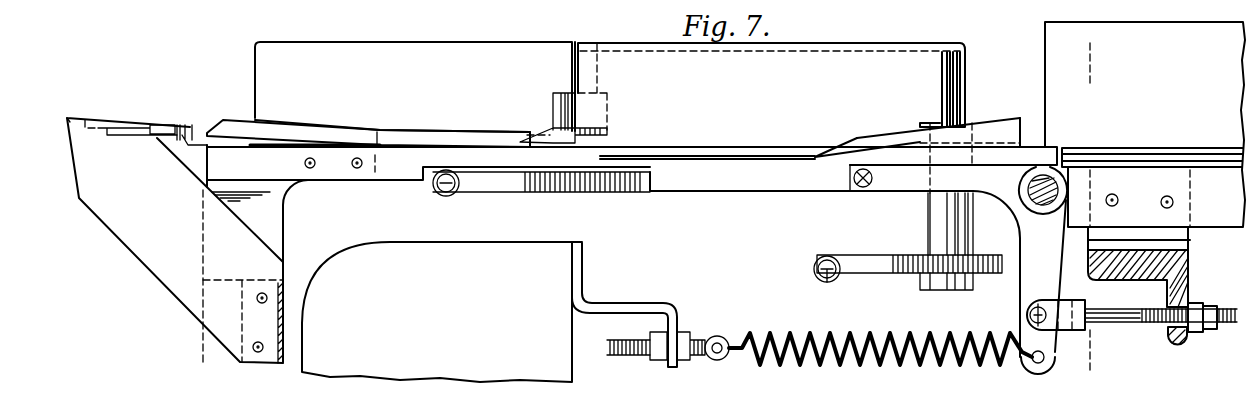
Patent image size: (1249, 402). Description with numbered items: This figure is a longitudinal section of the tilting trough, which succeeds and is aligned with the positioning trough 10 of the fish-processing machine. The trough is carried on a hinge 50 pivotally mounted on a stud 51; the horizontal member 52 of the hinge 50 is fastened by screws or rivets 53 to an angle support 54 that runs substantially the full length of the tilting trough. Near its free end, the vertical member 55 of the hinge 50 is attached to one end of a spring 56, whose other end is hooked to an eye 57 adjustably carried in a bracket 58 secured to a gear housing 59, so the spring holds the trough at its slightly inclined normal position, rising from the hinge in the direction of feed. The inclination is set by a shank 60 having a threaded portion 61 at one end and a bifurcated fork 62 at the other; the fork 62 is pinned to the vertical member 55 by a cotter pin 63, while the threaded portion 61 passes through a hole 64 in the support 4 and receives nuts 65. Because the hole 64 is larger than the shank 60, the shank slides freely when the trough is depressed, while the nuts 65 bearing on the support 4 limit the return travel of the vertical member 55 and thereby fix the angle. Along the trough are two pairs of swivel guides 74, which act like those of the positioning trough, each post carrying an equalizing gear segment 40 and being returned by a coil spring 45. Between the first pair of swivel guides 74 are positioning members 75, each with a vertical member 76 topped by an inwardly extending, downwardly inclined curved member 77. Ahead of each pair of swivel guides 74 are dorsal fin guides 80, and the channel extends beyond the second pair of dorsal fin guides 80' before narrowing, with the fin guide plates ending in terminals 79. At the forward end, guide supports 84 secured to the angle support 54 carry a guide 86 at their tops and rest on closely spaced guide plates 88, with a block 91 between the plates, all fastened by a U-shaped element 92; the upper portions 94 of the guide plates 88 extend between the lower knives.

The support 4 is at (1186, 273).
The positioning trough 10 is at (1083, 43).
The equalizing gear segment 40 is at (625, 197).
The coil spring 45 is at (452, 196).
The hinge 50 is at (1026, 280).
The stud 51 is at (1043, 205).
The horizontal member 52 is at (903, 190).
The screws or rivets 53 is at (865, 188).
The angle support 54 is at (797, 183).
The vertical member 55 is at (1050, 362).
The spring 56 is at (905, 336).
The eye 57 is at (712, 361).
The bracket 58 is at (658, 306).
The gear housing 59 is at (515, 248).
The shank 60 is at (1123, 324).
The threaded portion 61 is at (1163, 323).
The bifurcated fork 62 is at (1067, 303).
The cotter pin 63 is at (1030, 315).
The hole 64 is at (1180, 344).
The nuts 65 is at (1207, 305).
The swivel guides 74 is at (843, 52).
The positioning members 75 is at (978, 122).
The vertical member 76 is at (1005, 122).
The curved member 77 is at (822, 148).
The terminals 79 is at (98, 123).
The dorsal fin guides 80 is at (563, 118).
The second pair of dorsal fin guides 80' is at (368, 120).
The guide support 84 is at (278, 230).
The guide 86 is at (192, 126).
The guide plates 88 is at (148, 258).
The block 91 is at (240, 332).
The U-shaped element 92 is at (287, 307).
The upper portions 94 is at (76, 120).